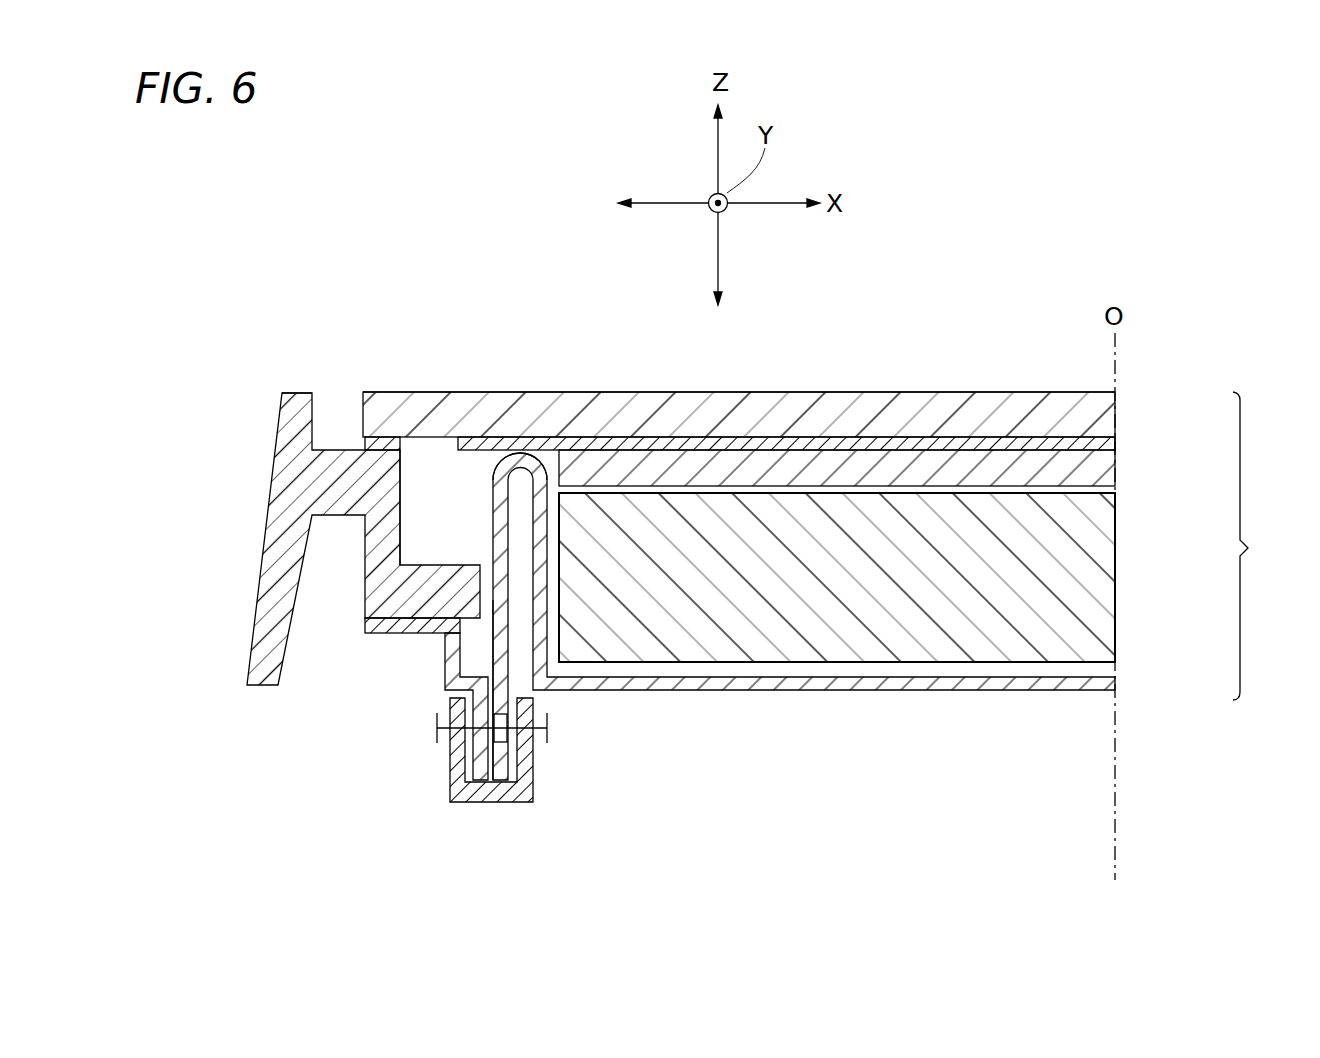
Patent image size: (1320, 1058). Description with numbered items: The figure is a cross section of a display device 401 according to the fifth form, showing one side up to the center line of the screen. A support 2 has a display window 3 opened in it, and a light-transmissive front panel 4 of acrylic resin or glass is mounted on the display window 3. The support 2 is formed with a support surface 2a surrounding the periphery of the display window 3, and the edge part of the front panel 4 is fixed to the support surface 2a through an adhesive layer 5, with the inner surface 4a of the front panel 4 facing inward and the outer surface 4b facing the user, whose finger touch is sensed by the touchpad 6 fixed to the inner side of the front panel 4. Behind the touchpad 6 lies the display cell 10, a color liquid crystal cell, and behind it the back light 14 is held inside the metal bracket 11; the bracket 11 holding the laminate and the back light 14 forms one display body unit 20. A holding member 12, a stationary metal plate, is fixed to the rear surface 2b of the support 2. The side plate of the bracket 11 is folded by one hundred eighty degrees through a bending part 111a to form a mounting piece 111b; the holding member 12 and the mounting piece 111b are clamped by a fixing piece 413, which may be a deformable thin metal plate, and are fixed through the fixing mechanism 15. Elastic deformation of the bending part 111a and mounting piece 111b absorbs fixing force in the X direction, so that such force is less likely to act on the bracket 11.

The support 2 is at (283, 487).
The support surface 2a is at (340, 450).
The rear surface 2b is at (392, 603).
The display window 3 is at (424, 458).
The front panel 4 is at (942, 408).
The inner surface 4a is at (788, 438).
The outer surface 4b is at (660, 392).
The adhesive layer 5 is at (378, 440).
The touchpad 6 is at (1113, 447).
The display cell 10 is at (1098, 473).
The bracket 11 is at (840, 697).
The holding member 12 is at (437, 660).
The back light 14 is at (1097, 582).
The fixing mechanism 15 is at (425, 787).
The display body unit 20 is at (1259, 546).
The bending part 111a is at (520, 455).
The mounting piece 111b is at (512, 632).
The display device 401 is at (1037, 280).
The fixing piece 413 is at (535, 782).